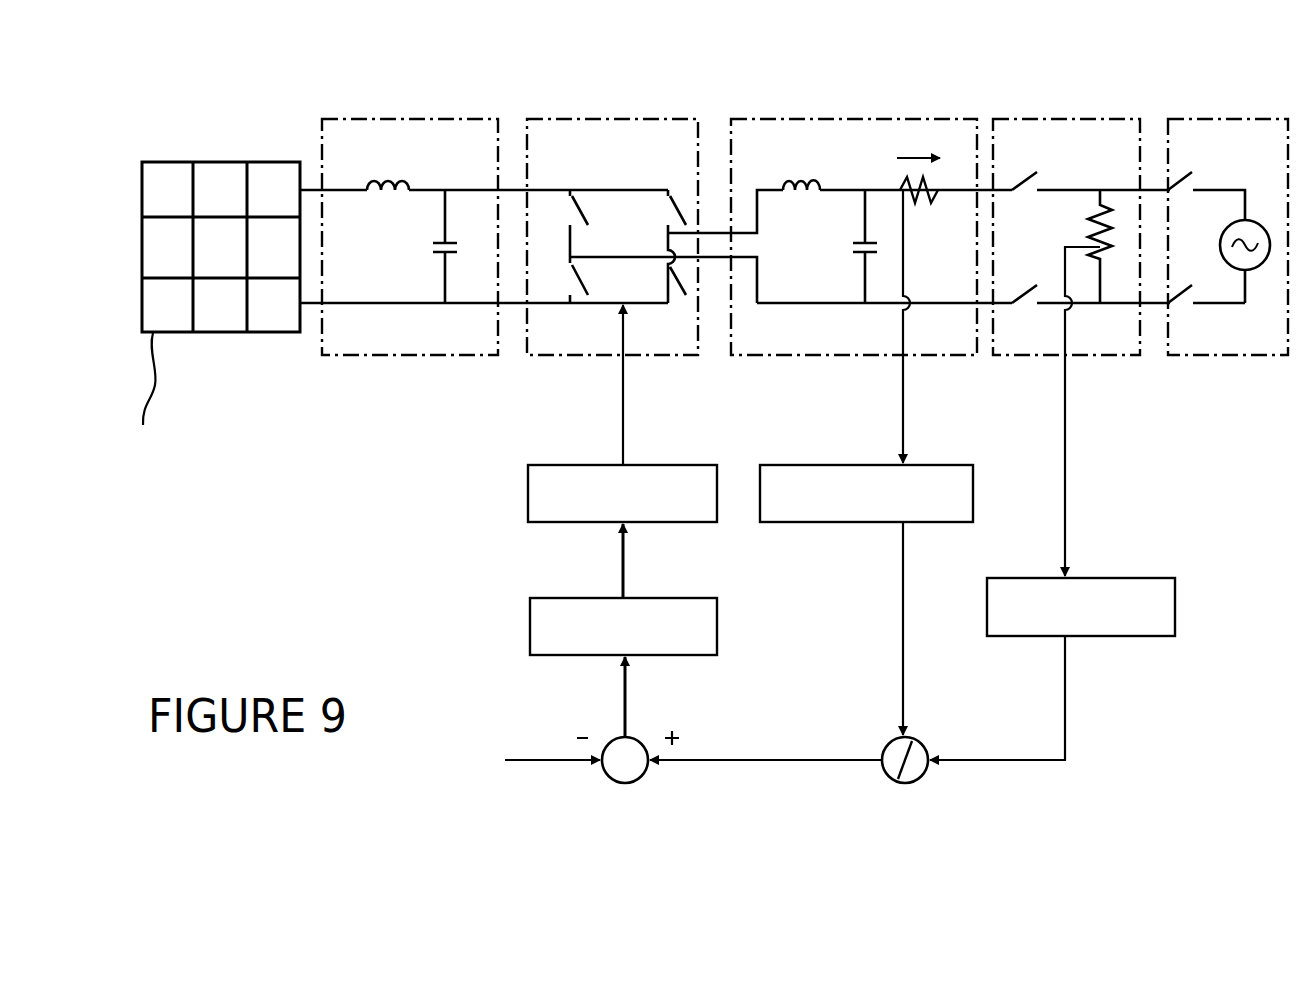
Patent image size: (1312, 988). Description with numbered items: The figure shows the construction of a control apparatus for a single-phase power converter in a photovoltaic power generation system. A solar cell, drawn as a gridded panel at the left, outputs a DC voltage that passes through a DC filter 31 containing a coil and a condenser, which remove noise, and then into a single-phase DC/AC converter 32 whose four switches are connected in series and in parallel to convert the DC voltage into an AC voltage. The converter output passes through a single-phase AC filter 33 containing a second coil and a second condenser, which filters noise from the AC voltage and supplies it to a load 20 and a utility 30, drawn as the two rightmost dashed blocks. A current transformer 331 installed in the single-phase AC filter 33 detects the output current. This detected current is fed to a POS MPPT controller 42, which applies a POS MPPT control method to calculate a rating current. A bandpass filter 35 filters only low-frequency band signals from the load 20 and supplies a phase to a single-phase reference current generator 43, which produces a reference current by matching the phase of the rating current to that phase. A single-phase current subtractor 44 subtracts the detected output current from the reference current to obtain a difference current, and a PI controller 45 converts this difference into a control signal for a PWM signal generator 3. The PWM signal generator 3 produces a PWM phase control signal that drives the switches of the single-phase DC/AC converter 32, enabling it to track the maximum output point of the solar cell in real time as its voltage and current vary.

The DC filter 31 is at (412, 118).
The single-phase DC/AC converter 32 is at (660, 118).
The single-phase AC filter 33 is at (854, 191).
The current transformer 331 is at (908, 190).
The load 20 is at (1095, 118).
The utility 30 is at (1238, 118).
The PWM signal generator 3 is at (543, 465).
The POS MPPT controller 42 is at (776, 465).
The PI controller 45 is at (543, 598).
The single-phase current subtractor 44 is at (638, 738).
The single-phase reference current generator 43 is at (923, 737).
The bandpass filter 35 is at (1162, 578).